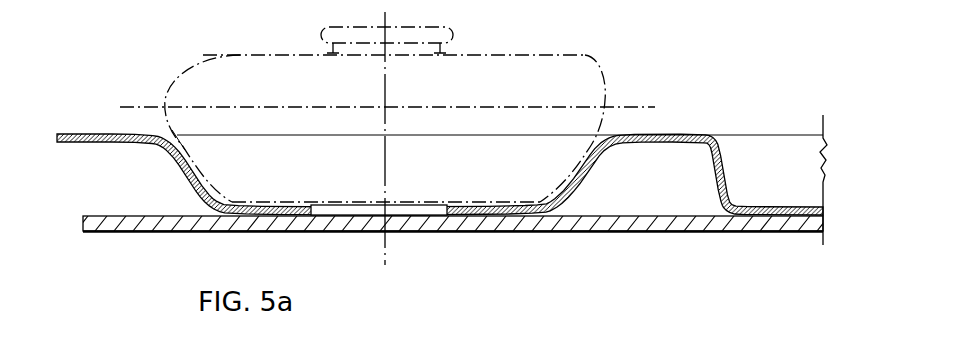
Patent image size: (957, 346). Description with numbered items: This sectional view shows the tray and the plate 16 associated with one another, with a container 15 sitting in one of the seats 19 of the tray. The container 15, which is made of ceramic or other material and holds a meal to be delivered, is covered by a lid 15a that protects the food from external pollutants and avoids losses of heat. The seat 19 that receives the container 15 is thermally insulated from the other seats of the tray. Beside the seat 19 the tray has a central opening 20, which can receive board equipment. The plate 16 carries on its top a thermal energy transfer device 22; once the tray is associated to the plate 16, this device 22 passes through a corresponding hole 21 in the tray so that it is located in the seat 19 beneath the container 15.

The container 15 is at (592, 145).
The lid 15a is at (203, 55).
The plate 16 is at (633, 241).
The peripheral seat 19 is at (549, 163).
The central opening 20 is at (762, 160).
The hole 21 is at (450, 207).
The thermal energy transfer device 22 is at (427, 205).